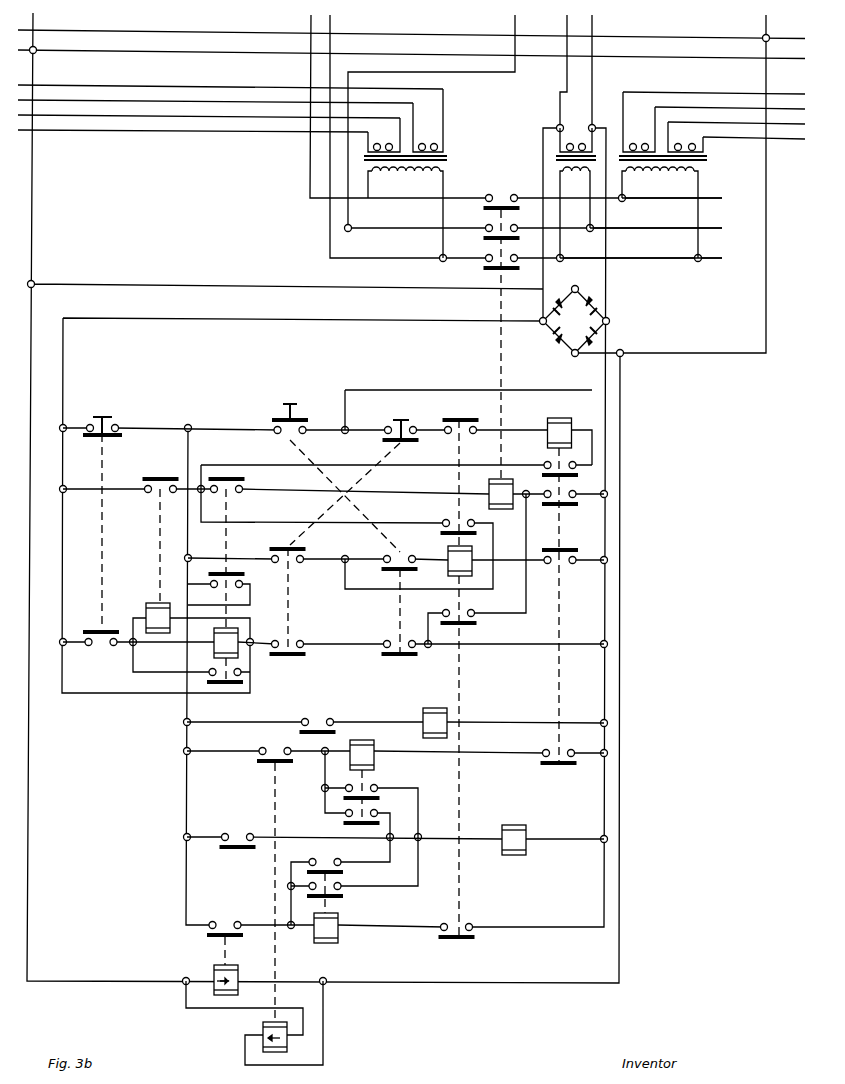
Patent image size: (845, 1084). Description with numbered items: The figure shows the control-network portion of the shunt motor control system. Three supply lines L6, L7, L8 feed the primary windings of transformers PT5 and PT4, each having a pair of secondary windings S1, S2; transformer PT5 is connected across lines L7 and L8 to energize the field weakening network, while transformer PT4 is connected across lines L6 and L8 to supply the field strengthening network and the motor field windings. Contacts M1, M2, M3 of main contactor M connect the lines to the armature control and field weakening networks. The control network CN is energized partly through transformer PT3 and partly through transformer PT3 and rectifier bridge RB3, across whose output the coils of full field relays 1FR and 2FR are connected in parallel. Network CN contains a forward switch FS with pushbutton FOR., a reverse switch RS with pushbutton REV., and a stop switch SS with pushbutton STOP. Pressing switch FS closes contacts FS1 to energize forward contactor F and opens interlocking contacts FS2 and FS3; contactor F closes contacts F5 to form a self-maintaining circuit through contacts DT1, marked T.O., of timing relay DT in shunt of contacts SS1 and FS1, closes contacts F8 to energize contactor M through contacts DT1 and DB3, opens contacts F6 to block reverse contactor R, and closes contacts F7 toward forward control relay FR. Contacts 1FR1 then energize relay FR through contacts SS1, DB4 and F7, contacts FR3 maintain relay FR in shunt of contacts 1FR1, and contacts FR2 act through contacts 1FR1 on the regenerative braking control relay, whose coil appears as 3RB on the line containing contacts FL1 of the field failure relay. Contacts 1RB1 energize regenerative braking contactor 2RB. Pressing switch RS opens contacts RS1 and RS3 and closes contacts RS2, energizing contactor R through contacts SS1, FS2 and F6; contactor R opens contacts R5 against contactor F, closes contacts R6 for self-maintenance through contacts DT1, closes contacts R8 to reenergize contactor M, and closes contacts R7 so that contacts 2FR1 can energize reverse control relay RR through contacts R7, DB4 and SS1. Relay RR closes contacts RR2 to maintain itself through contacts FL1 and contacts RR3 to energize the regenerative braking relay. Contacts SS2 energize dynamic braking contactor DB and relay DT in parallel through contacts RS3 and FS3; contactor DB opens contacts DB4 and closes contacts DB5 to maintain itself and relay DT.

The secondary winding S1 is at (535, 135).
The secondary winding S2 is at (534, 120).
The transformer PT5 is at (449, 160).
The transformer PT3 is at (553, 160).
The transformer PT4 is at (709, 160).
The contacts of main contactor M M1 is at (504, 190).
The contacts of main contactor M M2 is at (486, 225).
The contacts of main contactor M M3 is at (486, 255).
The line L6 is at (682, 199).
The line L7 is at (666, 229).
The line L8 is at (651, 259).
The rectifier bridge RB3 is at (575, 319).
The control network CN is at (358, 377).
The stop push button STOP is at (102, 417).
The contacts of stop switch SS SS1 is at (122, 423).
The contacts of forward switch FS FS1 is at (270, 426).
The forward push button FOR. is at (291, 402).
The contacts of reverse switch RS RS1 is at (386, 426).
The reverse push button REV. is at (402, 419).
The contacts of reverse contactor R R5 is at (465, 436).
The forward contactor F is at (570, 418).
The contacts of forward contactor F F5 is at (546, 463).
The contacts of timing relay DT DT1 is at (152, 496).
The time opening contact T.O. is at (173, 502).
The contacts of dynamic braking contactor DB DB3 is at (232, 496).
The forward switch FS is at (301, 453).
The reverse switch RS is at (363, 478).
The main contactor M is at (514, 486).
The contacts of forward contactor F F8 is at (572, 486).
The contacts of reverse contactor R R6 is at (445, 513).
The stop switch SS is at (98, 535).
The contacts of reverse switch RS RS2 is at (292, 566).
The interlocking contacts of forward switch FS FS2 is at (406, 553).
The reverse contactor R is at (445, 574).
The interlocking contacts of forward contactor F F6 is at (565, 566).
The timing relay DT is at (148, 610).
The contacts of dynamic braking contactor DB DB4 is at (218, 590).
The contacts of reverse contactor R R8 is at (472, 608).
The dynamic braking contactor DB is at (214, 640).
The contacts of reverse switch RS RS3 is at (291, 638).
The contacts of forward switch FS FS3 is at (393, 638).
The contacts of stop switch SS SS2 is at (98, 648).
The contacts of dynamic braking contactor DB DB5 is at (243, 667).
The contacts of relay 1RB 1RB1 is at (318, 716).
The regenerative braking contactor 2RB is at (422, 713).
The contacts of forward contactor F F7 is at (563, 748).
The contacts of full field relay 1FR 1FR1 is at (274, 744).
The forward control relay FR is at (375, 746).
The contacts of forward control relay FR FR2 is at (376, 782).
The contacts of forward control relay FR FR3 is at (376, 809).
The contacts of field failure relay FL FL1 is at (240, 823).
The relay coil 3RB is at (527, 827).
The contacts of reverse control relay RR RR2 is at (326, 856).
The contacts of reverse control relay RR RR3 is at (339, 881).
The contacts of full field relay 2FR 2FR1 is at (230, 912).
The reverse control relay RR is at (339, 918).
The contacts of reverse contactor R R7 is at (464, 921).
The full field relay 2FR is at (214, 973).
The full field relay 1FR is at (262, 1030).